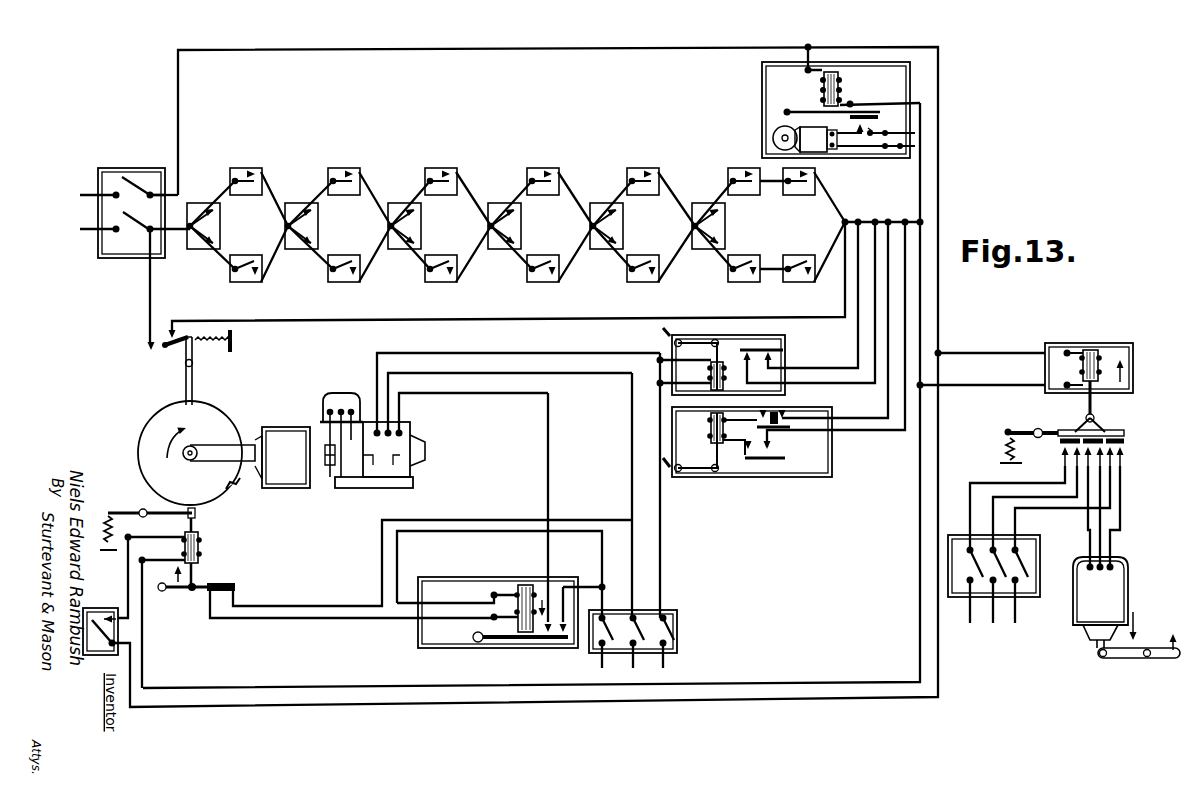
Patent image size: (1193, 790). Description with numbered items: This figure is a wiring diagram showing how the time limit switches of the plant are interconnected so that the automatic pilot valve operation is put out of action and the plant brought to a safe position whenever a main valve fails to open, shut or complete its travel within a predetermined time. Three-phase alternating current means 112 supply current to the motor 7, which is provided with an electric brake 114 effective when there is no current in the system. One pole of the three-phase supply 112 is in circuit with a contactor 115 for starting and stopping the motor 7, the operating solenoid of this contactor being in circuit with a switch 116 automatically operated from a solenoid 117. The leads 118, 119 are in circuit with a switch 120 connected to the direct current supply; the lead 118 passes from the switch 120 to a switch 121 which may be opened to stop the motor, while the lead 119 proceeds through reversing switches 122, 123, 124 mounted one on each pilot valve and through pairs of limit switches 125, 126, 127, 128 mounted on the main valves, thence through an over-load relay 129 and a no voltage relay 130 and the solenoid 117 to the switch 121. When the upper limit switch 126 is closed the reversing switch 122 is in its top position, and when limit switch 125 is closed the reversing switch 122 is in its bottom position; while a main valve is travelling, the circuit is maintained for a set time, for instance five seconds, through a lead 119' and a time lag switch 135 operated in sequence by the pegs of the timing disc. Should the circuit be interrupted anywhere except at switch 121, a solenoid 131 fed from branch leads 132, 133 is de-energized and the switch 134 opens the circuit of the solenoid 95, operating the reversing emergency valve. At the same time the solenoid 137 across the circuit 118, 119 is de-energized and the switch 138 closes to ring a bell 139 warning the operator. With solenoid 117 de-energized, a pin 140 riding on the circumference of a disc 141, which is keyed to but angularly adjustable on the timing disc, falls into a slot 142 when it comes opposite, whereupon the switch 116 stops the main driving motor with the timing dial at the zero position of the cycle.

The motor 7 is at (420, 450).
The solenoid 95 is at (1128, 596).
The three-phase alternating current means 112 is at (640, 668).
The electric brake 114 is at (337, 396).
The contactor 115 is at (520, 640).
The switch 116 is at (228, 582).
The solenoid 117 is at (200, 548).
The lead 118 is at (178, 107).
The lead 119 is at (531, 395).
The lead 119' is at (507, 280).
The switch 120 is at (116, 175).
The switch 121 is at (92, 608).
The reversing switch 122 is at (205, 212).
The reversing switch 123 is at (298, 212).
The reversing switch 124 is at (396, 212).
The limit switch 125 is at (262, 277).
The limit switch 126 is at (262, 182).
The limit switch 127 is at (356, 280).
The limit switch 128 is at (355, 172).
The over-load relay 129 is at (785, 348).
The no voltage relay 130 is at (718, 441).
The solenoid 131 is at (1090, 345).
The branch lead 132 is at (990, 385).
The branch lead 133 is at (998, 353).
The switch 134 is at (1118, 432).
The time lag switch 135 is at (168, 350).
The solenoid 137 is at (832, 70).
The switch 138 is at (880, 112).
The bell 139 is at (773, 132).
The pin 140 is at (188, 520).
The disc 141 is at (222, 421).
The slot 142 is at (236, 486).